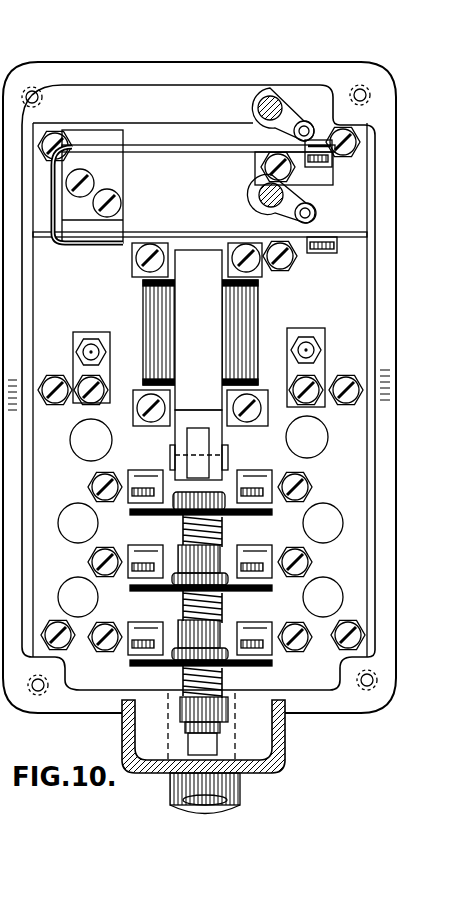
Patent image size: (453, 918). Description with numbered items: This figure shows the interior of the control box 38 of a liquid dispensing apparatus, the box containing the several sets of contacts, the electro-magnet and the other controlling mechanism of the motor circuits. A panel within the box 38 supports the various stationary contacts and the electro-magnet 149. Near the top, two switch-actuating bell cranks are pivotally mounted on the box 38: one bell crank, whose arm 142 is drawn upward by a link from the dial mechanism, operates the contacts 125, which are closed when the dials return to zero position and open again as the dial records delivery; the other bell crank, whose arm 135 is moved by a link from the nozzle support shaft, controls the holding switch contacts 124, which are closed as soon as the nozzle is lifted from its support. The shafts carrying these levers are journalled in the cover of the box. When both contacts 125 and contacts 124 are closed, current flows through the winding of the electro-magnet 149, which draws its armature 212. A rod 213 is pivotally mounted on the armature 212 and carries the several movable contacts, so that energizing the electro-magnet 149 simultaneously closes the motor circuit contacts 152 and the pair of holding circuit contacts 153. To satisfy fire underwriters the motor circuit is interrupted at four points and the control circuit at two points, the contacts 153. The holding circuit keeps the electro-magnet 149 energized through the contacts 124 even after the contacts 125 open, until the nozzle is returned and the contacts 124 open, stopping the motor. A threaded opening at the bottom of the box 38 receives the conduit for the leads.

The control box 38 is at (397, 488).
The bell crank arm 142 is at (292, 112).
The contacts 125 is at (332, 153).
The bell crank arm 135 is at (295, 197).
The holding switch contacts 124 is at (336, 241).
The electro-magnet 149 is at (250, 302).
The armature 212 is at (223, 440).
The holding circuit contacts 153 is at (128, 473).
The motor circuit contacts 152 is at (140, 575).
The rod 213 is at (212, 742).